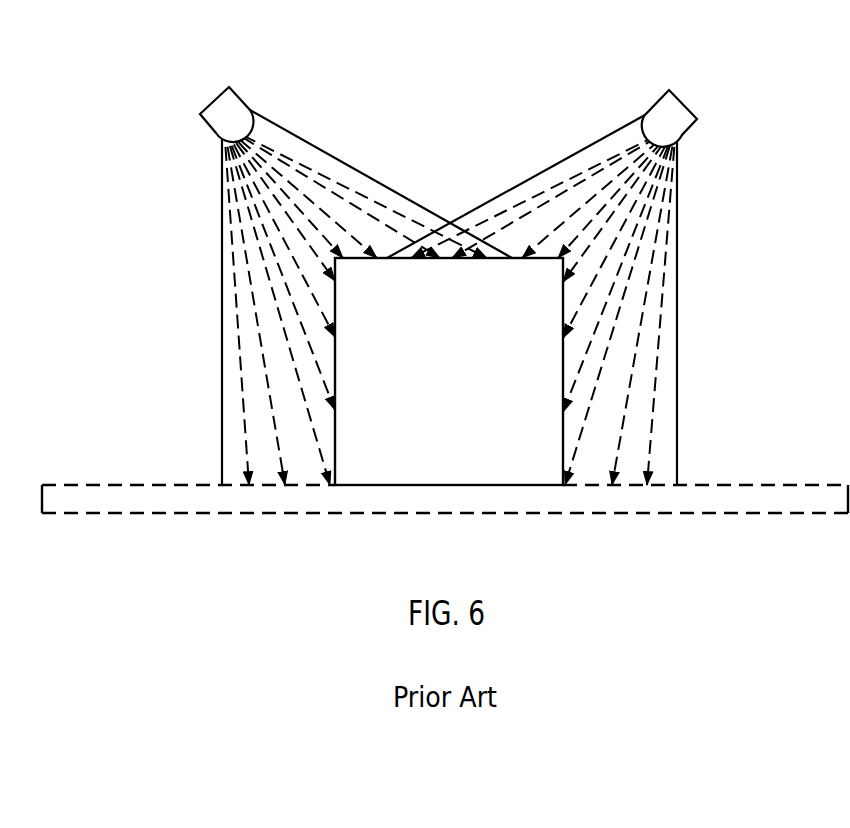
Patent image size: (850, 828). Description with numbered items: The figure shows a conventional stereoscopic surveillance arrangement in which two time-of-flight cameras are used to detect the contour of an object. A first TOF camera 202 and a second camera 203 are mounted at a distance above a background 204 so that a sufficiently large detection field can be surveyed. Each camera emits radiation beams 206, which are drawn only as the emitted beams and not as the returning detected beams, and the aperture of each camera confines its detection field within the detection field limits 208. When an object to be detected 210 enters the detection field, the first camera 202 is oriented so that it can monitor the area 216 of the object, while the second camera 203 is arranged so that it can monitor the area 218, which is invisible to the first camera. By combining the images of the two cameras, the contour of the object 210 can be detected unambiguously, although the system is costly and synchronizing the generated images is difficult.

The TOF camera 202 is at (214, 94).
The second camera 203 is at (684, 92).
The background 204 is at (810, 514).
The radiation beams 206 is at (239, 200).
The detection field limits 208 is at (476, 205).
The object to be detected 210 is at (394, 425).
The area 216 is at (333, 368).
The area 218 is at (567, 371).